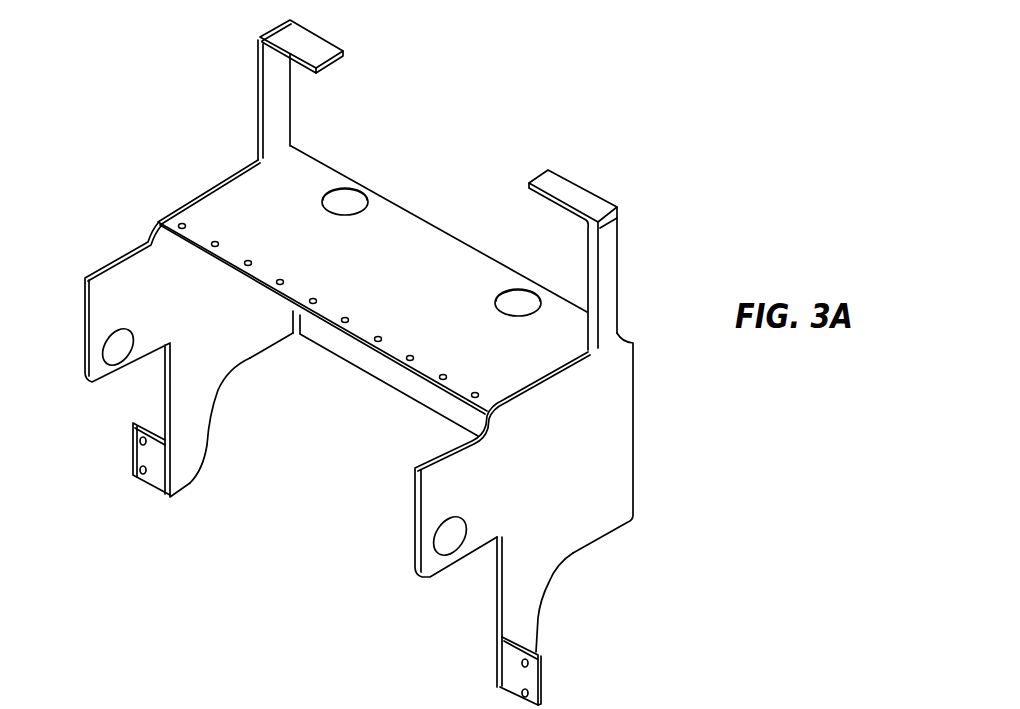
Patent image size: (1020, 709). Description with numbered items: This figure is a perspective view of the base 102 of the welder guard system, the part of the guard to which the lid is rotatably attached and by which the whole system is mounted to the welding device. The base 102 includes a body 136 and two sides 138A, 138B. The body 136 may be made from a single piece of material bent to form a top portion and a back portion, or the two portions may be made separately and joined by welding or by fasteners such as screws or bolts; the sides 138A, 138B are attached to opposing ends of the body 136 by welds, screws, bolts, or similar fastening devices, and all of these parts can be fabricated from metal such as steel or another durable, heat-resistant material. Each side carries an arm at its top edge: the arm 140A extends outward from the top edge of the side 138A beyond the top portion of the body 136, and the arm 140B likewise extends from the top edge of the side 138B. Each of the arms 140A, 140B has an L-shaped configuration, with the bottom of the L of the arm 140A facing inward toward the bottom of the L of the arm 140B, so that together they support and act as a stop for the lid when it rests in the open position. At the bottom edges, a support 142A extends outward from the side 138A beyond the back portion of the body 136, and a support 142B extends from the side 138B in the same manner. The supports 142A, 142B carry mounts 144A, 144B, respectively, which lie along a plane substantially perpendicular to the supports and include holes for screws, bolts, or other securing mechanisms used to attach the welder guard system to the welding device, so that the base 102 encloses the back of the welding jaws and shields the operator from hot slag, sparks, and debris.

The base 102 is at (633, 113).
The body 136 is at (373, 184).
The side 138A is at (225, 353).
The side 138B is at (620, 463).
The arm 140A is at (322, 53).
The arm 140B is at (568, 192).
The support 142A is at (187, 419).
The support 142B is at (512, 600).
The mount 144A is at (142, 452).
The mount 144B is at (510, 670).